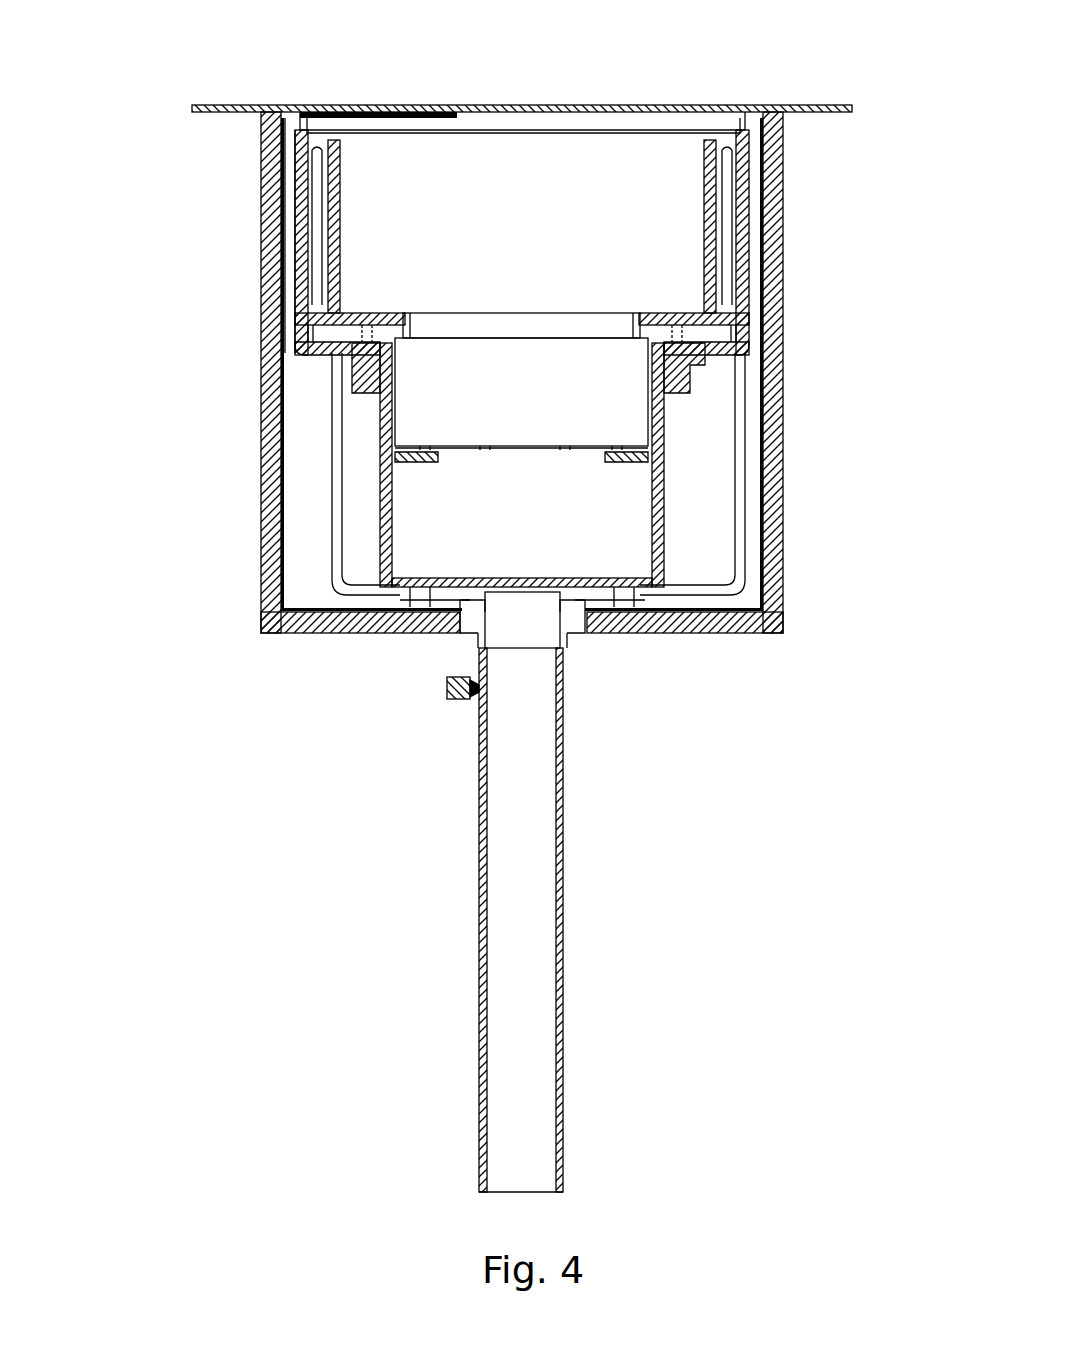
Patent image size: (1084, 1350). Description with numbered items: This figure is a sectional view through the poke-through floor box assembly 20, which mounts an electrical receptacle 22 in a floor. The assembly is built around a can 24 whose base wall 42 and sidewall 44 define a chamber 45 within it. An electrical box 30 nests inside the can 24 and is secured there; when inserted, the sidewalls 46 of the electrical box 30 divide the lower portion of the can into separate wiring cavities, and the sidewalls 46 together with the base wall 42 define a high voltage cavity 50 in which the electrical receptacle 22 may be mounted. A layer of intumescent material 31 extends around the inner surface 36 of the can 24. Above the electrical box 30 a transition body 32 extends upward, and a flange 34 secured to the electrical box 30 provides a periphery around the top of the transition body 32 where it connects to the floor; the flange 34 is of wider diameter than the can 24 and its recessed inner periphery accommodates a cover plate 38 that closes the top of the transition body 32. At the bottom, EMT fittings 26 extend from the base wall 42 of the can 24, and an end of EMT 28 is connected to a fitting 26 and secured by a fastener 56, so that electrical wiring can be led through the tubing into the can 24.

The poke-through floor box assembly 20 is at (126, 212).
The electrical receptacle 22 is at (517, 328).
The can 24 is at (593, 372).
The EMT fitting 26 is at (568, 638).
The EMT 28 is at (563, 822).
The electrical box 30 is at (658, 535).
The layer of intumescent material 31 is at (763, 408).
The transition body 32 is at (748, 232).
The flange 34 is at (822, 103).
The recessed inner periphery 36 is at (335, 183).
The cover plate 38 is at (537, 103).
The base wall 42 is at (700, 617).
The sidewall 44 is at (778, 512).
The chamber 45 is at (292, 268).
The sidewalls of the electrical box 46 is at (386, 490).
The high voltage cavity 50 is at (537, 417).
The fastener 56 is at (446, 688).